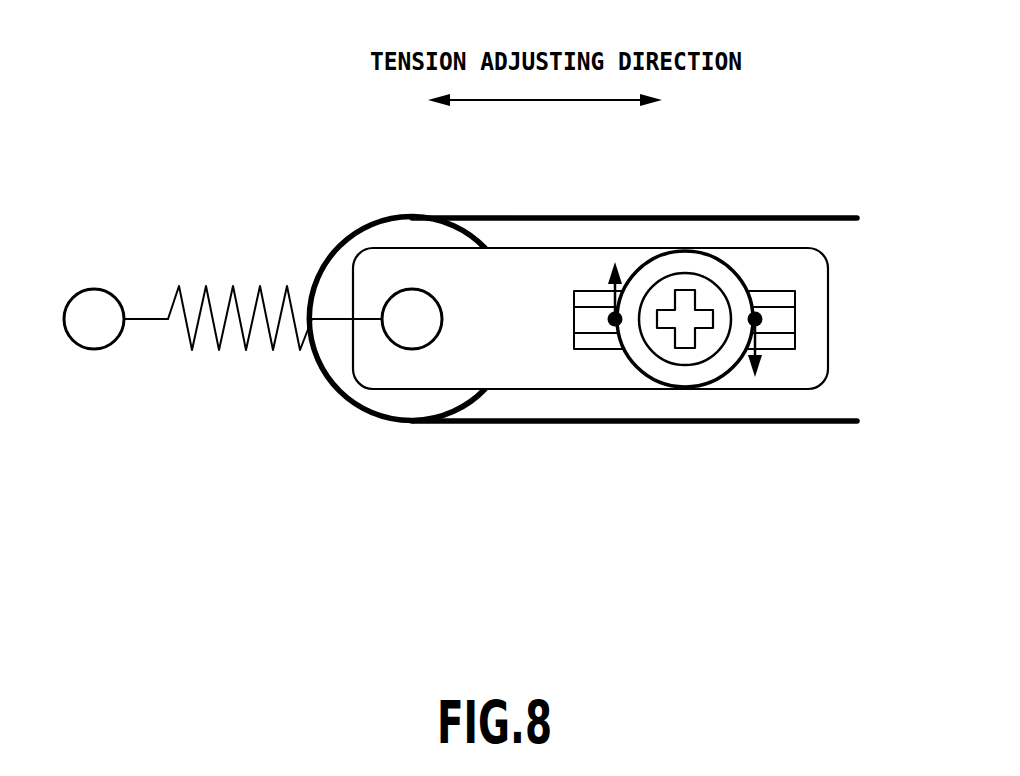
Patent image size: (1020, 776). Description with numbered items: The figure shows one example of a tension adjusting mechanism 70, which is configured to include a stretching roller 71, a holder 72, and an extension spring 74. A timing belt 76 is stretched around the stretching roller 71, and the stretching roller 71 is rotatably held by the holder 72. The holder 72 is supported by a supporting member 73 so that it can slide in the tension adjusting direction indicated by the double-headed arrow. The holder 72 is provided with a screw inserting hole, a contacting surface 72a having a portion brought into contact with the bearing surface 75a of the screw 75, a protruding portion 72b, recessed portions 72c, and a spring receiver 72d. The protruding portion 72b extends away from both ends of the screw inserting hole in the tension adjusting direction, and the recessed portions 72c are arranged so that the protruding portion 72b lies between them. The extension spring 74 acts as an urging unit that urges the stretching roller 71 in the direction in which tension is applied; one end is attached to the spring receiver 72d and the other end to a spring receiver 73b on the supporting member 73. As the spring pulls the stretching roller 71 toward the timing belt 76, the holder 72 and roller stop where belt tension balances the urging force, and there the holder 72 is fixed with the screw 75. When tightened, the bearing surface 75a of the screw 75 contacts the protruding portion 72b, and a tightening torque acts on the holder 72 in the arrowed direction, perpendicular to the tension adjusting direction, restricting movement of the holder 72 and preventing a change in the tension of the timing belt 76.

The tension adjusting mechanism 70 is at (606, 380).
The stretching roller 71 is at (385, 402).
The holder 72 is at (607, 337).
The contacting surface 72a is at (782, 368).
The protruding portion 72b is at (738, 322).
The recessed portions 72c is at (792, 296).
The spring receiver 72d is at (417, 317).
The supporting member 73 is at (186, 323).
The spring receiver 73b is at (103, 289).
The extension spring 74 is at (210, 297).
The screw 75 is at (685, 336).
The bearing surface 75a is at (698, 248).
The timing belt 76 is at (733, 423).